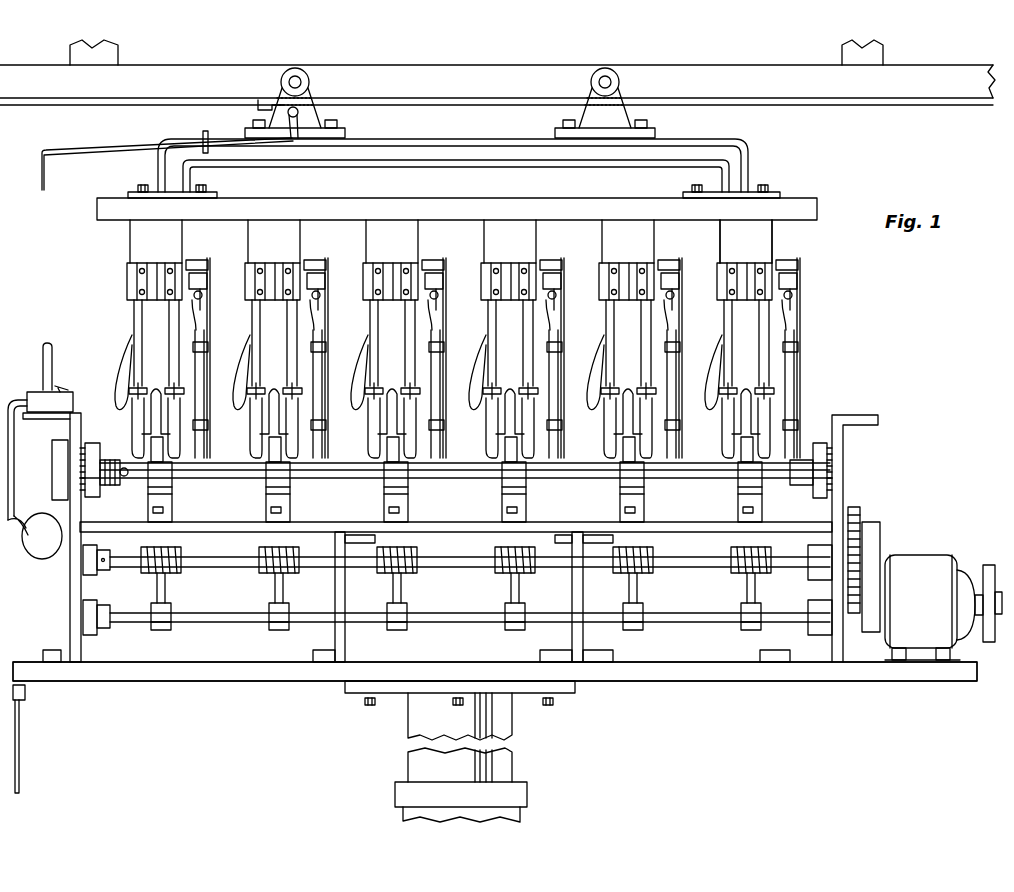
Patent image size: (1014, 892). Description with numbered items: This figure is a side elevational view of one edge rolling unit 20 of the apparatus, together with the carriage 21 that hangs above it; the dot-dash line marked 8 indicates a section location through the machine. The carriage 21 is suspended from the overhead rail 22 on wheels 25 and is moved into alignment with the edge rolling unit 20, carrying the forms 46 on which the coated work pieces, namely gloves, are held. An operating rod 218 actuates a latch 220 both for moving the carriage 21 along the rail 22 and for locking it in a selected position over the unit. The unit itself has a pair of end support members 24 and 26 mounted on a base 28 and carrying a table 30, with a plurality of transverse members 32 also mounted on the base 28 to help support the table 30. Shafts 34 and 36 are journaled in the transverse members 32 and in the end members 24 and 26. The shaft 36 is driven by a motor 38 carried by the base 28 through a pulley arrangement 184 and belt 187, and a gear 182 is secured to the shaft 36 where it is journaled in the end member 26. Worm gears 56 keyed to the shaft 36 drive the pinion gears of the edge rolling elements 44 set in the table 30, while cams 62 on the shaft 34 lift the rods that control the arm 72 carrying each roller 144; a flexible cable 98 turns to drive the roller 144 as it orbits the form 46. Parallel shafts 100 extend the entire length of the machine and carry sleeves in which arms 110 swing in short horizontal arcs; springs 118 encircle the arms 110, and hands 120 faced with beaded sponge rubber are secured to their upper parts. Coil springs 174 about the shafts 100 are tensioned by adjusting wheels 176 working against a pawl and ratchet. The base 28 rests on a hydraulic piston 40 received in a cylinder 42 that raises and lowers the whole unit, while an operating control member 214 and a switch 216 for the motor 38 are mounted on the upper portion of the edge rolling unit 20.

The edge rolling unit 20 is at (880, 357).
The carriage 21 is at (606, 204).
The overhead rail 22 is at (858, 92).
The end support member 24 is at (82, 645).
The wheel 25 is at (308, 76).
The end support member 26 is at (836, 636).
The base 28 is at (680, 682).
The table 30 is at (692, 522).
The transverse member 32 is at (347, 640).
The shaft 34 is at (226, 612).
The shaft 36 is at (204, 566).
The motor 38 is at (934, 607).
The hydraulic piston 40 is at (496, 731).
The cylinder 42 is at (512, 814).
The edge rolling element 44 is at (820, 340).
The form 46 is at (762, 254).
The worm gear 56 is at (286, 572).
The cam 62 is at (170, 630).
The arm 72 is at (322, 322).
The flexible cable 98 is at (334, 306).
The shaft 100 is at (202, 470).
The arm 110 is at (138, 333).
The spring 118 is at (130, 384).
The hand 120 is at (132, 282).
The roller 144 is at (205, 272).
The coil spring 174 is at (108, 458).
The adjusting wheel 176 is at (93, 440).
The gear 182 is at (851, 510).
The pulley arrangement 184 is at (988, 570).
The belt 187 is at (876, 546).
The operating control member 214 is at (66, 322).
The switch 216 is at (62, 386).
The operating rod 218 is at (101, 153).
The latch 220 is at (260, 107).
The section line 8 is at (147, 493).